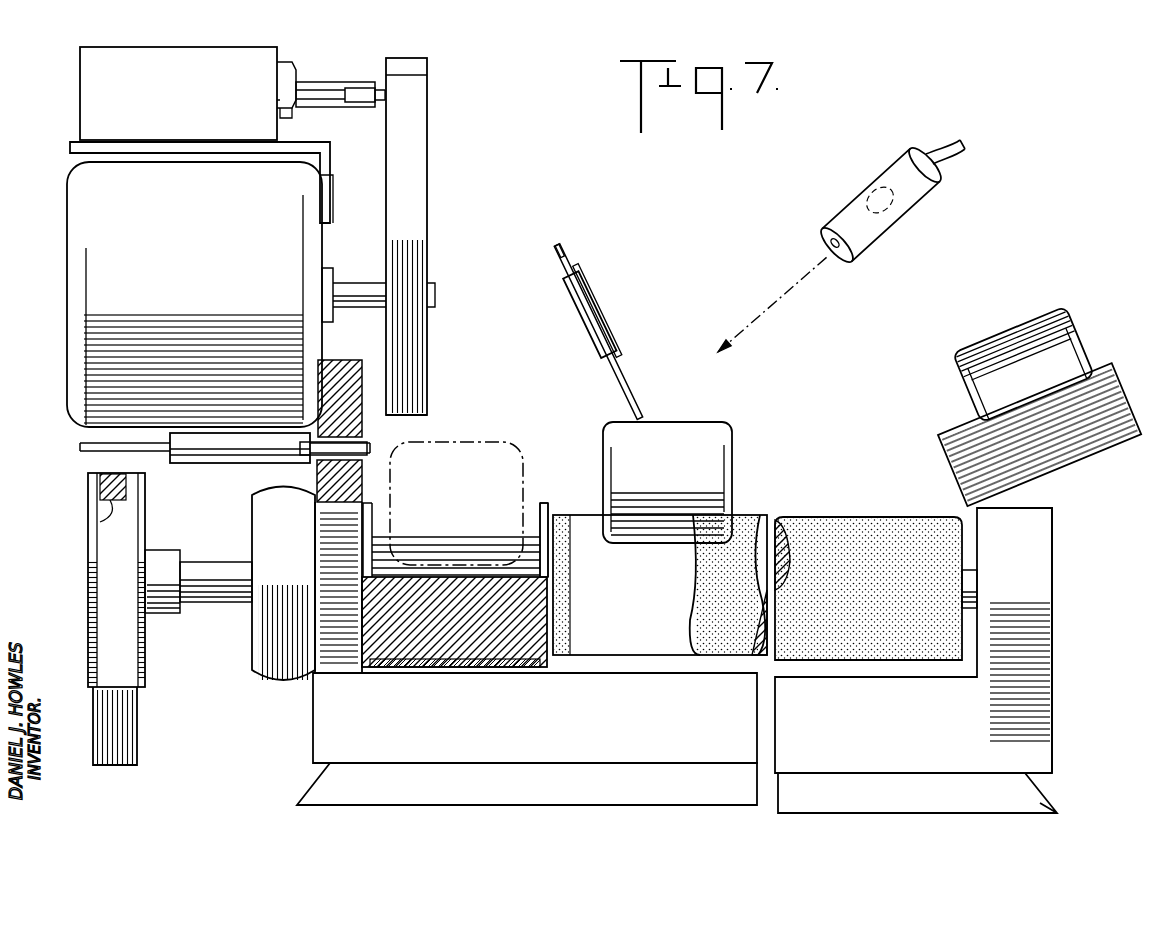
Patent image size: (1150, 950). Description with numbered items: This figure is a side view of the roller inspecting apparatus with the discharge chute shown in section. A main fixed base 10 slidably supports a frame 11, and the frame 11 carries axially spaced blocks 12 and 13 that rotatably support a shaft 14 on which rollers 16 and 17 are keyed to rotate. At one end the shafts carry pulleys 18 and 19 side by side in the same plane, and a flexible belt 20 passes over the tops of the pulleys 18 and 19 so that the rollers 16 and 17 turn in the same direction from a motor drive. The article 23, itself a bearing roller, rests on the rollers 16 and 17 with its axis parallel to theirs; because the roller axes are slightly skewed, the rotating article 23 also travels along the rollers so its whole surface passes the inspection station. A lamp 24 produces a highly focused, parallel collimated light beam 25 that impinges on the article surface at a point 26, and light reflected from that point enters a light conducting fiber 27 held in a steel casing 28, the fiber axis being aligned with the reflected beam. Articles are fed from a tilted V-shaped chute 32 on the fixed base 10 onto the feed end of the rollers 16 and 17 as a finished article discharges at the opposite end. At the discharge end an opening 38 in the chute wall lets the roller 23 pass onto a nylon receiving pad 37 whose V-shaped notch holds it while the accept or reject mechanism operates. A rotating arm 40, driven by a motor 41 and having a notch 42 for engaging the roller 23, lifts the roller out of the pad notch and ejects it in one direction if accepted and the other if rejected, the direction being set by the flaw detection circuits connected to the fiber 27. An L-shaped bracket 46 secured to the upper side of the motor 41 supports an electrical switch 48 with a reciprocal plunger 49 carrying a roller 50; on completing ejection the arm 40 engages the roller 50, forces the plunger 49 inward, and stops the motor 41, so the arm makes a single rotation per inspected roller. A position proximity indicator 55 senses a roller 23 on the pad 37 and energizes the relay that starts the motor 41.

The main fixed base 10 is at (1040, 803).
The frame 11 is at (1035, 742).
The block 12 is at (320, 668).
The block 13 is at (1042, 550).
The shaft 14 is at (968, 587).
The roller 16 is at (850, 530).
The roller 17 is at (580, 515).
The pulley 18 is at (145, 672).
The pulley 19 is at (100, 497).
The flexible belt 20 is at (130, 738).
The article 23 is at (478, 437).
The lamp 24 is at (887, 238).
The collimated light beam 25 is at (745, 328).
The point 26 is at (645, 419).
The light conducting fiber 27 is at (560, 247).
The steel casing 28 is at (607, 335).
The V-shaped chute 32 is at (1082, 453).
The nylon receiving pad 37 is at (430, 670).
The opening 38 is at (548, 500).
The rotating arm 40 is at (423, 196).
The motor 41 is at (67, 362).
The notch 42 is at (415, 125).
The L-shaped bracket 46 is at (75, 147).
The electrical switch 48 is at (95, 98).
The reciprocal plunger 49 is at (325, 82).
The roller 50 is at (355, 110).
The position proximity indicator 55 is at (245, 462).